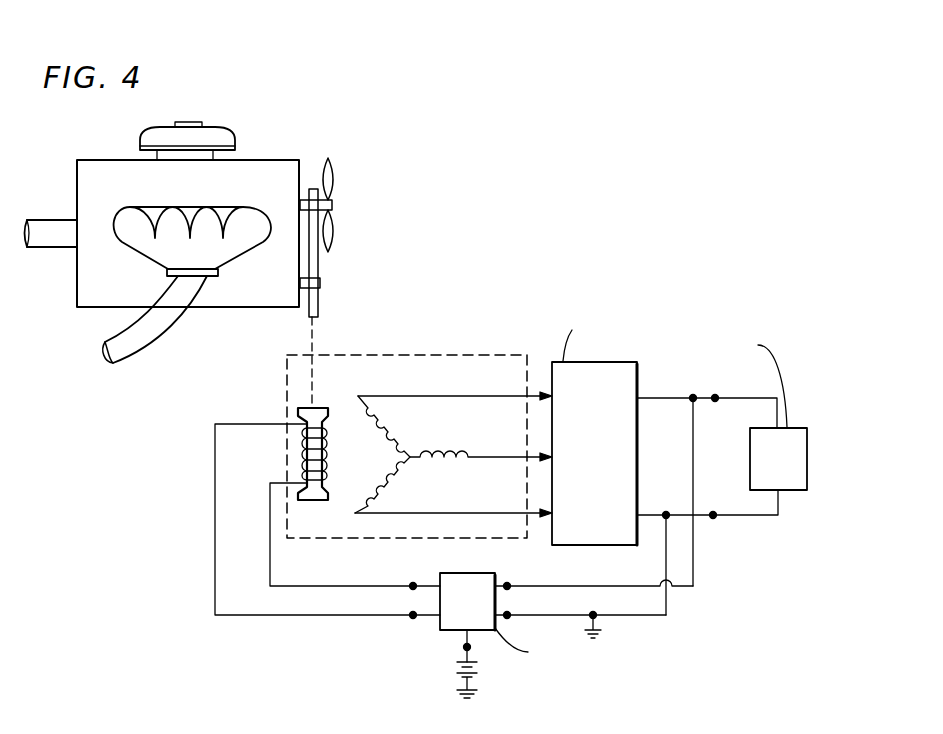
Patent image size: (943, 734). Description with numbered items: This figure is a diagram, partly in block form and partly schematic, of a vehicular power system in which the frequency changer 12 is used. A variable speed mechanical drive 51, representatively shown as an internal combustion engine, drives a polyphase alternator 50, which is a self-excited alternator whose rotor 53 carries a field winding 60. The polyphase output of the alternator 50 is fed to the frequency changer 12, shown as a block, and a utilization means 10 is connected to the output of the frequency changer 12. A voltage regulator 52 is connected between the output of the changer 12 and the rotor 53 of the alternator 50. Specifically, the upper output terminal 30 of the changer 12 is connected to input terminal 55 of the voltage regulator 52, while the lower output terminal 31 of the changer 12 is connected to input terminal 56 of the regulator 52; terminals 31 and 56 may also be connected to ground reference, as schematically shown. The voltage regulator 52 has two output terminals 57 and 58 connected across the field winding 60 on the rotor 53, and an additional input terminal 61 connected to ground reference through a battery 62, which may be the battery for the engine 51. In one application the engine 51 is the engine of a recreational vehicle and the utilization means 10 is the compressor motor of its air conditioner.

The variable speed mechanical drive 51 is at (270, 163).
The polyphase alternator 50 is at (393, 354).
The rotor 53 is at (322, 408).
The field winding 60 is at (327, 452).
The frequency changer 12 is at (590, 362).
The utilization means 10 is at (788, 428).
The upper output terminal 30 is at (715, 397).
The lower output terminal 31 is at (714, 516).
The voltage regulator 52 is at (447, 630).
The input terminal 55 is at (507, 586).
The input terminal 56 is at (507, 615).
The output terminal 57 is at (413, 585).
The output terminal 58 is at (413, 615).
The additional input terminal 61 is at (470, 647).
The battery 62 is at (480, 668).